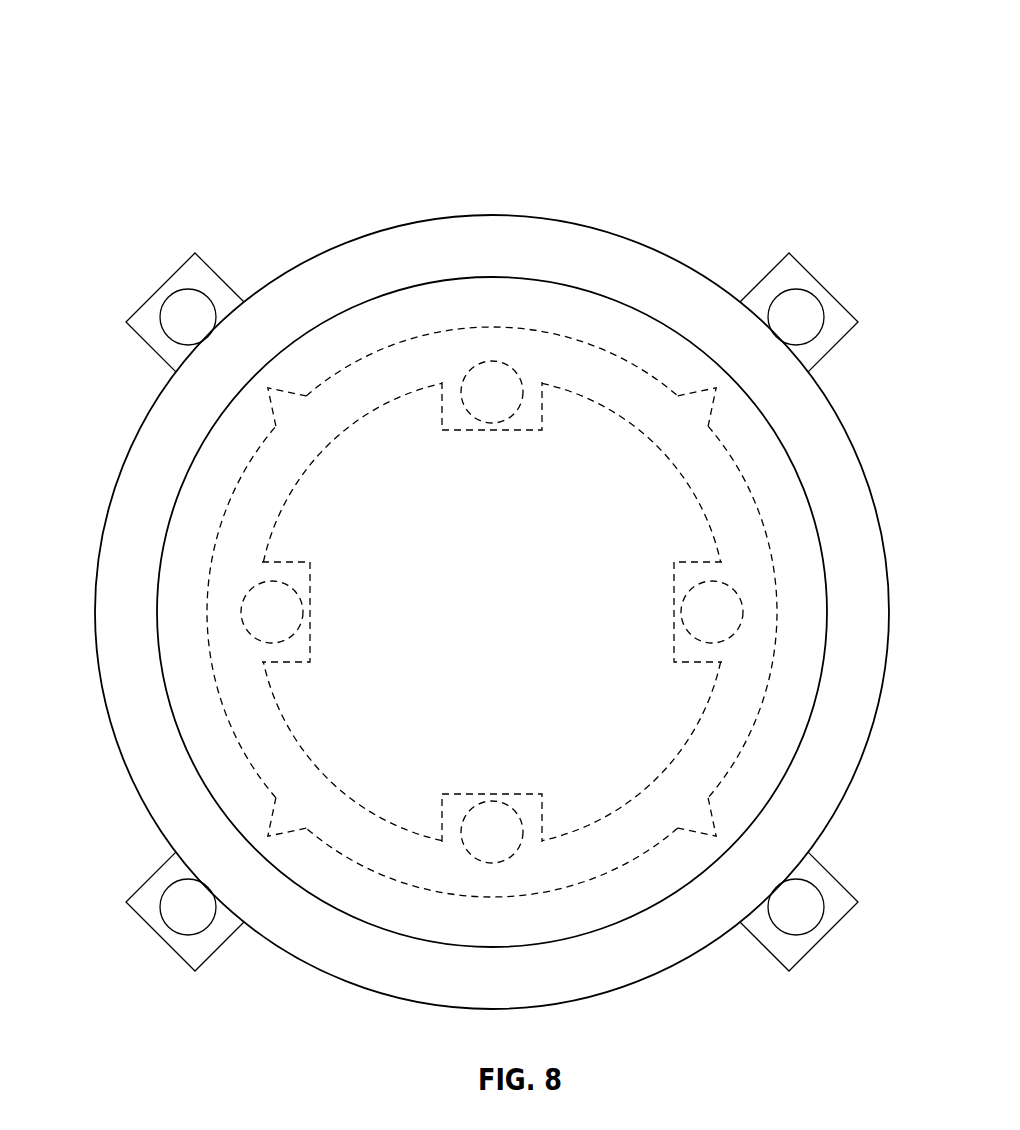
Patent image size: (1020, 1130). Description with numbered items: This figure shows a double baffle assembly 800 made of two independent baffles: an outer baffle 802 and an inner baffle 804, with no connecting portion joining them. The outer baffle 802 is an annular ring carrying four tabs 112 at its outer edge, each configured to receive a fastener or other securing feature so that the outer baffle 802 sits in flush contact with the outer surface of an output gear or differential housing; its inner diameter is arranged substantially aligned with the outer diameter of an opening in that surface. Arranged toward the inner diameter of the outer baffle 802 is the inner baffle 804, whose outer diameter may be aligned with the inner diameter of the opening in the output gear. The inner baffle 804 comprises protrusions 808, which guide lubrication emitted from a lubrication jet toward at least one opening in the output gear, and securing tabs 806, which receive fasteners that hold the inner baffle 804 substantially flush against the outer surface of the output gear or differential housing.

The double baffle assembly 800 is at (126, 54).
The tabs 112 is at (148, 252).
The outer baffle 802 is at (540, 222).
The inner baffle 804 is at (356, 432).
The securing tabs 806 is at (490, 436).
The protrusions 808 is at (724, 416).